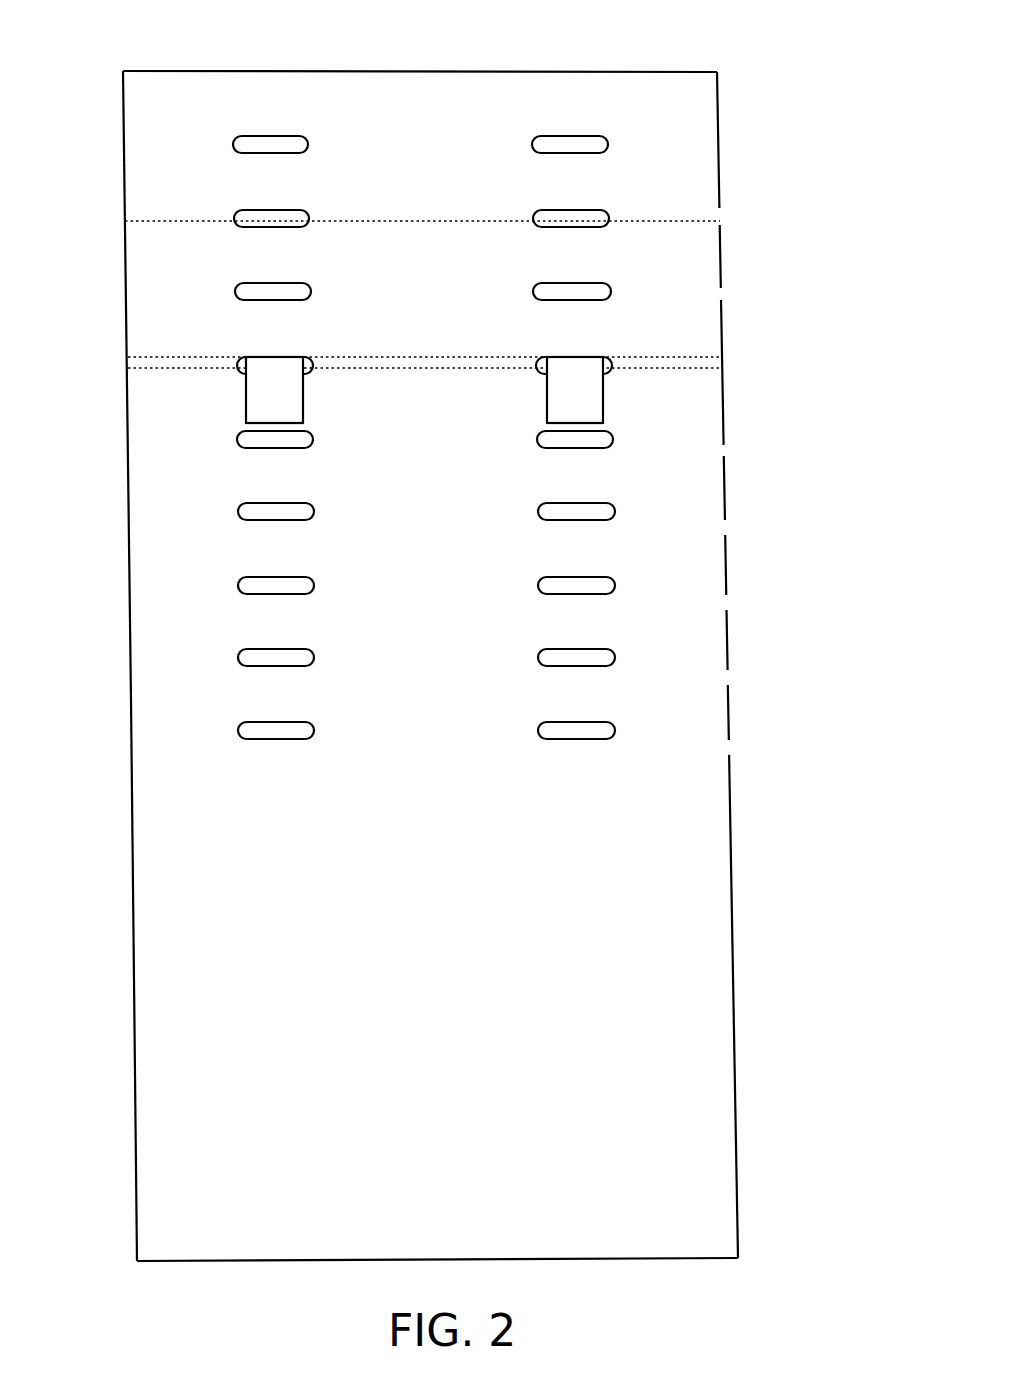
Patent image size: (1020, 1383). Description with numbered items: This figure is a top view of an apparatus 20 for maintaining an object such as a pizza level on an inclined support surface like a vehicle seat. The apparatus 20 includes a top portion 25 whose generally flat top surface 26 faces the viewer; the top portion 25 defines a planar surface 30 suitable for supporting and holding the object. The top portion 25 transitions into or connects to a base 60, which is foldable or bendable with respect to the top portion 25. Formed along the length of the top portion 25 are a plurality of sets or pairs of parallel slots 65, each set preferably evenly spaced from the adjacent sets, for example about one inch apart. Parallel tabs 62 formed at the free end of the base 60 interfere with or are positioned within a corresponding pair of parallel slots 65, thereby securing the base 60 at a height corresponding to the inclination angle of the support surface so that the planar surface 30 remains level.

The apparatus 20 is at (498, 57).
The top portion 25 is at (165, 916).
The top surface 26 is at (710, 906).
The planar surface 30 is at (160, 573).
The base 60 is at (139, 269).
The tab 62 is at (263, 372).
The parallel slots 65 is at (532, 362).